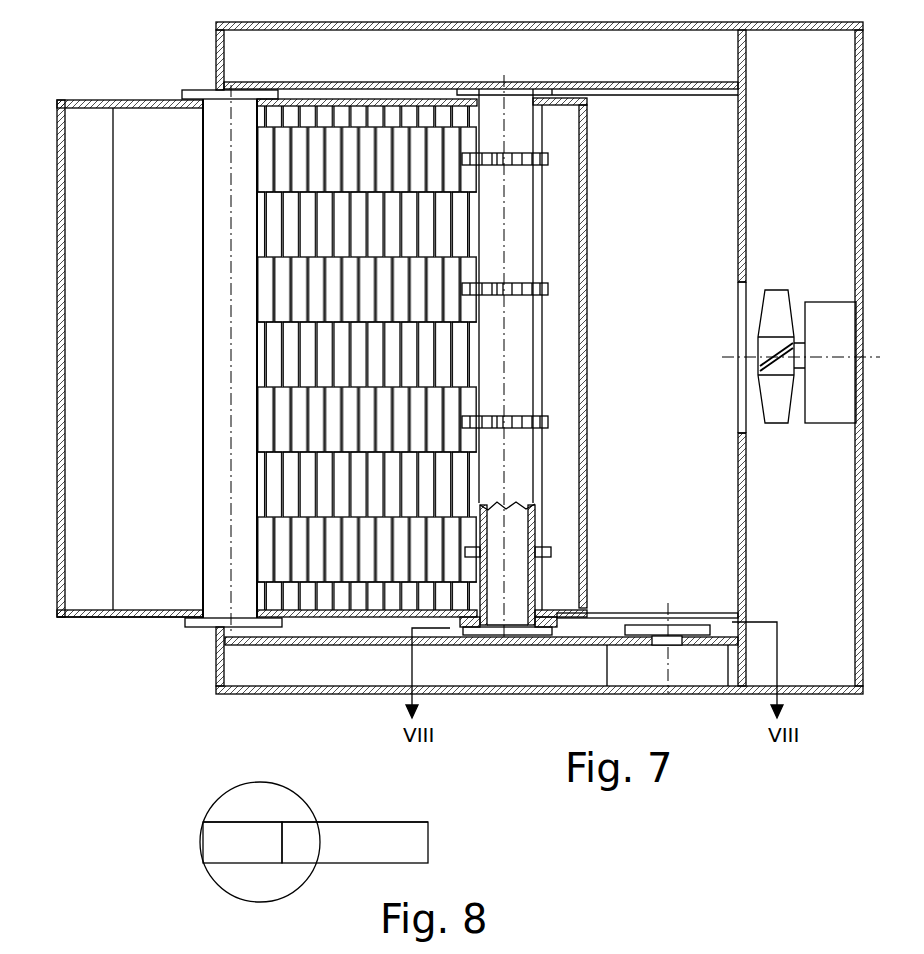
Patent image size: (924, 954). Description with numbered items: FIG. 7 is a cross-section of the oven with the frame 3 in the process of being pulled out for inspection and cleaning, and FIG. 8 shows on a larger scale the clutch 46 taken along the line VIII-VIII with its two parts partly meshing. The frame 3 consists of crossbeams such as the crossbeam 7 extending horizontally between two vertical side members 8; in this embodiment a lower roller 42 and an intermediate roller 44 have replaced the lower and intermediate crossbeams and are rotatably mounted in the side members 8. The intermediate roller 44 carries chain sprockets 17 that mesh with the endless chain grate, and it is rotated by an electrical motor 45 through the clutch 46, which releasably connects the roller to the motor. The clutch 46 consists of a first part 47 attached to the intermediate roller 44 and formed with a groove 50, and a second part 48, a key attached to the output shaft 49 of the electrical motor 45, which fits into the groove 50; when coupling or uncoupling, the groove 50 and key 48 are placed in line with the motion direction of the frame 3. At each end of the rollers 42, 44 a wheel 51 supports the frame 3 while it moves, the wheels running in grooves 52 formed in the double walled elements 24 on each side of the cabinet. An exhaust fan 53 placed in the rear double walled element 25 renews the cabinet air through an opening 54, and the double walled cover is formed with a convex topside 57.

In FIG. 7, the frame 3 is at (588, 290).
In FIG. 7, the crossbeam 7 is at (66, 452).
In FIG. 7, the side member 8 is at (150, 618).
In FIG. 7, the chain sprocket 17 is at (552, 553).
In FIG. 7, the double walled element 24 is at (326, 672).
In FIG. 7, the double walled element 25 is at (816, 528).
In FIG. 7, the lower roller 42 is at (202, 548).
In FIG. 7, the intermediate roller 44 is at (532, 366).
In FIG. 7, the electrical motor 45 is at (706, 668).
In FIG. 8, the clutch 46 is at (176, 792).
In FIG. 7, the first part 47 is at (534, 632).
In FIG. 8, the first part 47 is at (260, 890).
In FIG. 7, the second part 48 is at (680, 626).
In FIG. 8, the second part 48 is at (395, 830).
In FIG. 7, the output shaft 49 is at (666, 644).
In FIG. 8, the groove 50 is at (212, 836).
In FIG. 7, the wheel 51 is at (486, 94).
In FIG. 7, the groove 52 is at (642, 92).
In FIG. 7, the exhaust fan 53 is at (826, 312).
In FIG. 7, the opening 54 is at (736, 300).
In FIG. 7, the convex topside 57 is at (197, 92).